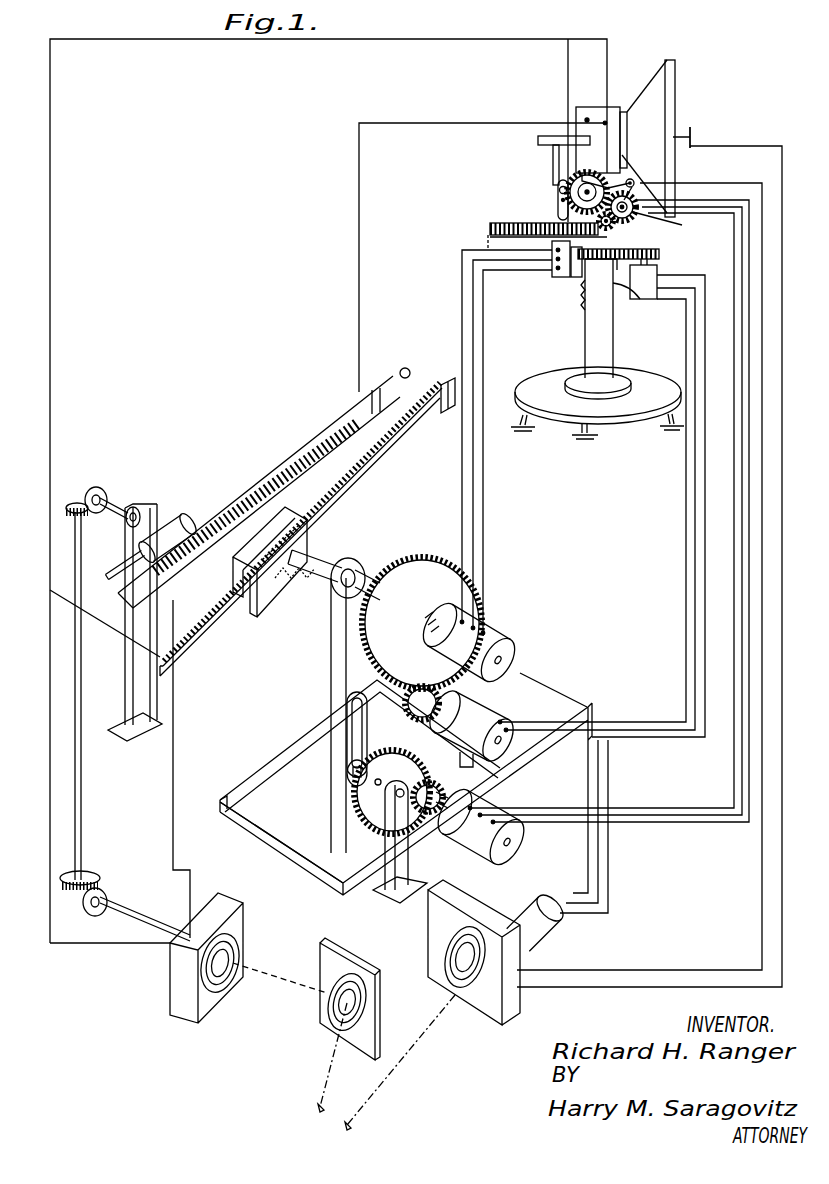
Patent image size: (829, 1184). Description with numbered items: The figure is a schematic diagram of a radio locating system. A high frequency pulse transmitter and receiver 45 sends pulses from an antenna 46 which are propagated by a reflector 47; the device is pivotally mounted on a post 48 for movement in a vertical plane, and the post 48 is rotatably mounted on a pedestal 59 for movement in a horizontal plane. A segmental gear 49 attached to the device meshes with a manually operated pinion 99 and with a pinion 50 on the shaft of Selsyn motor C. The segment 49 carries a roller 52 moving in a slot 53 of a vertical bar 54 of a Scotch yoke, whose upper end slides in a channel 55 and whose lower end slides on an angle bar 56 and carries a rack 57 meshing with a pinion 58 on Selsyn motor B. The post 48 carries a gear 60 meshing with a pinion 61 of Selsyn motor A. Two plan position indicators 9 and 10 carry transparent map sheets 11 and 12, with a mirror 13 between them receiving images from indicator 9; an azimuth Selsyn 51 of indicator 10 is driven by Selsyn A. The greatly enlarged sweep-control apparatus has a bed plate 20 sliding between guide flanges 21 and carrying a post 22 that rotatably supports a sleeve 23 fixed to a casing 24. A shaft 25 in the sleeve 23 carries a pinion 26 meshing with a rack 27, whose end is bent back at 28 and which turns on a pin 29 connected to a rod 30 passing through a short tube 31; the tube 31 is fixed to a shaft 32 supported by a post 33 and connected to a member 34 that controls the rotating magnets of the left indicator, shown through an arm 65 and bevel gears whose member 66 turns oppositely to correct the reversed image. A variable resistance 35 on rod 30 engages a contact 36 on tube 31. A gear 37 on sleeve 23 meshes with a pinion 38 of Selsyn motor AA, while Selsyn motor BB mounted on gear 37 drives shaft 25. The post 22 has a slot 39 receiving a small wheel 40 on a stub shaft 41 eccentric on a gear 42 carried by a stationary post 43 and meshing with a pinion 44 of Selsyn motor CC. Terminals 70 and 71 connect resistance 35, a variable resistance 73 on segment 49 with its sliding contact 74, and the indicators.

The plan position indicator 9 is at (172, 992).
The plan position indicator 10 is at (510, 1003).
The sheet of transparent material 11 is at (241, 944).
The sheet of transparent material 12 is at (453, 945).
The mirror 13 is at (343, 985).
The bed plate 20 is at (265, 815).
The guide flanges 21 is at (222, 805).
The post 22 is at (331, 800).
The sleeve 23 is at (358, 556).
The casing 24 is at (285, 602).
The shaft 25 is at (340, 542).
The pinion 26 is at (307, 574).
The rack 27 is at (224, 626).
The bent-back end 28 is at (452, 383).
The pin 29 is at (405, 368).
The rod 30 is at (395, 386).
The short tube 31 is at (184, 514).
The shaft 32 is at (167, 507).
The post 33 is at (128, 527).
The member 34 is at (95, 497).
The variable resistance 35 is at (265, 480).
The contact 36 is at (185, 560).
The gear 37 is at (432, 560).
The pinion 38 is at (416, 714).
The slot 39 is at (347, 708).
The small wheel 40 is at (353, 767).
The stub shaft 41 is at (347, 776).
The gear 42 is at (354, 826).
The stationary post 43 is at (385, 890).
The pinion 44 is at (434, 786).
The transmitter and receiver 45 is at (623, 110).
The antenna 46 is at (693, 135).
The reflector 47 is at (676, 108).
The post 48 is at (603, 192).
The segmental gear 49 is at (570, 211).
The pinion 50 is at (636, 217).
The azimuth Selsyn 51 is at (545, 926).
The roller 52 is at (558, 185).
The slot 53 is at (560, 200).
The vertical bar 54 is at (553, 157).
The channel 55 is at (538, 140).
The angle bar 56 is at (548, 235).
The rack 57 is at (490, 227).
The pinion 58 is at (552, 255).
The pedestal 59 is at (590, 338).
The gear 60 is at (582, 295).
The pinion 61 is at (659, 255).
The arm 65 is at (85, 813).
The bevel gear member 66 is at (162, 905).
The terminal 70 is at (587, 120).
The terminal 71 is at (608, 120).
The variable resistance 73 is at (574, 272).
The sliding contact 74 is at (637, 186).
The pinion 99 is at (613, 228).
The Selsyn motor A is at (635, 282).
The Selsyn motor B is at (557, 265).
The Selsyn motor C is at (660, 220).
The Selsyn motor AA is at (472, 726).
The Selsyn motor BB is at (468, 643).
The Selsyn motor CC is at (481, 827).